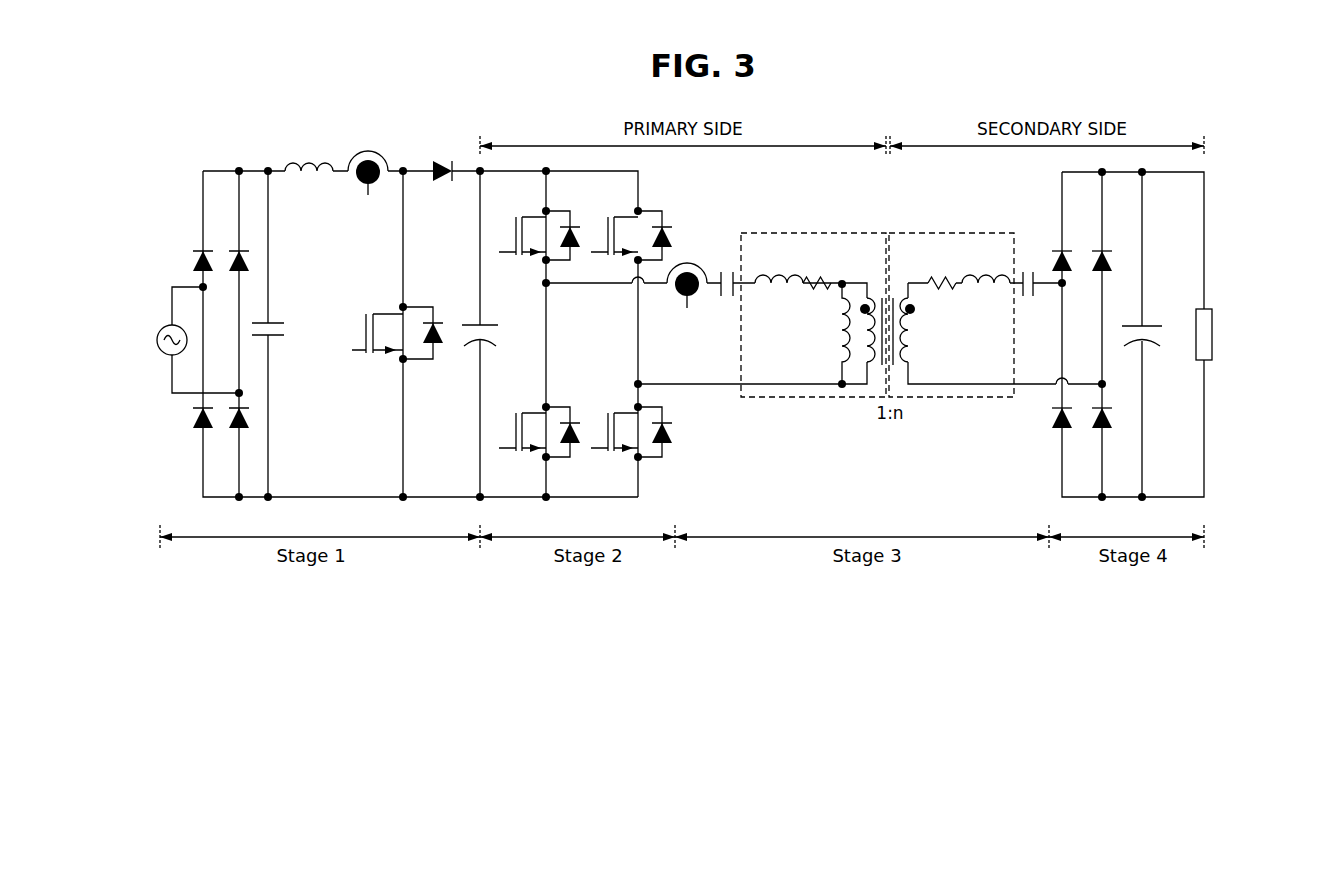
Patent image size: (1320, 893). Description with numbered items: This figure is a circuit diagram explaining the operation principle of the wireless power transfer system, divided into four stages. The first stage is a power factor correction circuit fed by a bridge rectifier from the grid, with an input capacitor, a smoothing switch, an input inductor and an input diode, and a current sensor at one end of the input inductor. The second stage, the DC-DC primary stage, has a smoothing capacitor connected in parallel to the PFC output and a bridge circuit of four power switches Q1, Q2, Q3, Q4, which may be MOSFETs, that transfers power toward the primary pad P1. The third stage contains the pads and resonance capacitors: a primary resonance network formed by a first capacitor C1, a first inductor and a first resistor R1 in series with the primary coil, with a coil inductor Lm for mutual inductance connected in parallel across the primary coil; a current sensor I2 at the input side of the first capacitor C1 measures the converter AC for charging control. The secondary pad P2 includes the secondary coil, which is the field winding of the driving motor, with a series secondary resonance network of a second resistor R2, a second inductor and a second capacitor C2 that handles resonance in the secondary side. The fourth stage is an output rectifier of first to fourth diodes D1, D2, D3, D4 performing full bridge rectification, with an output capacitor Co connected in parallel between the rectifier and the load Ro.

The power switch Q1 is at (539, 224).
The power switch Q2 is at (539, 420).
The power switch Q3 is at (631, 224).
The power switch Q4 is at (631, 420).
The resonant current sensor I2 is at (687, 303).
The first capacitor C1 is at (721, 268).
The primary pad P1 is at (810, 232).
The first resistor R1 is at (817, 269).
The coil inductor Lm is at (829, 334).
The secondary pad P2 is at (936, 232).
The second resistor R2 is at (942, 269).
The second capacitor C2 is at (1030, 266).
The first diode D1 is at (1071, 247).
The second diode D2 is at (1071, 430).
The third diode D3 is at (1111, 247).
The fourth diode D4 is at (1111, 430).
The output capacitor Co is at (1150, 324).
The load Ro is at (1220, 334).